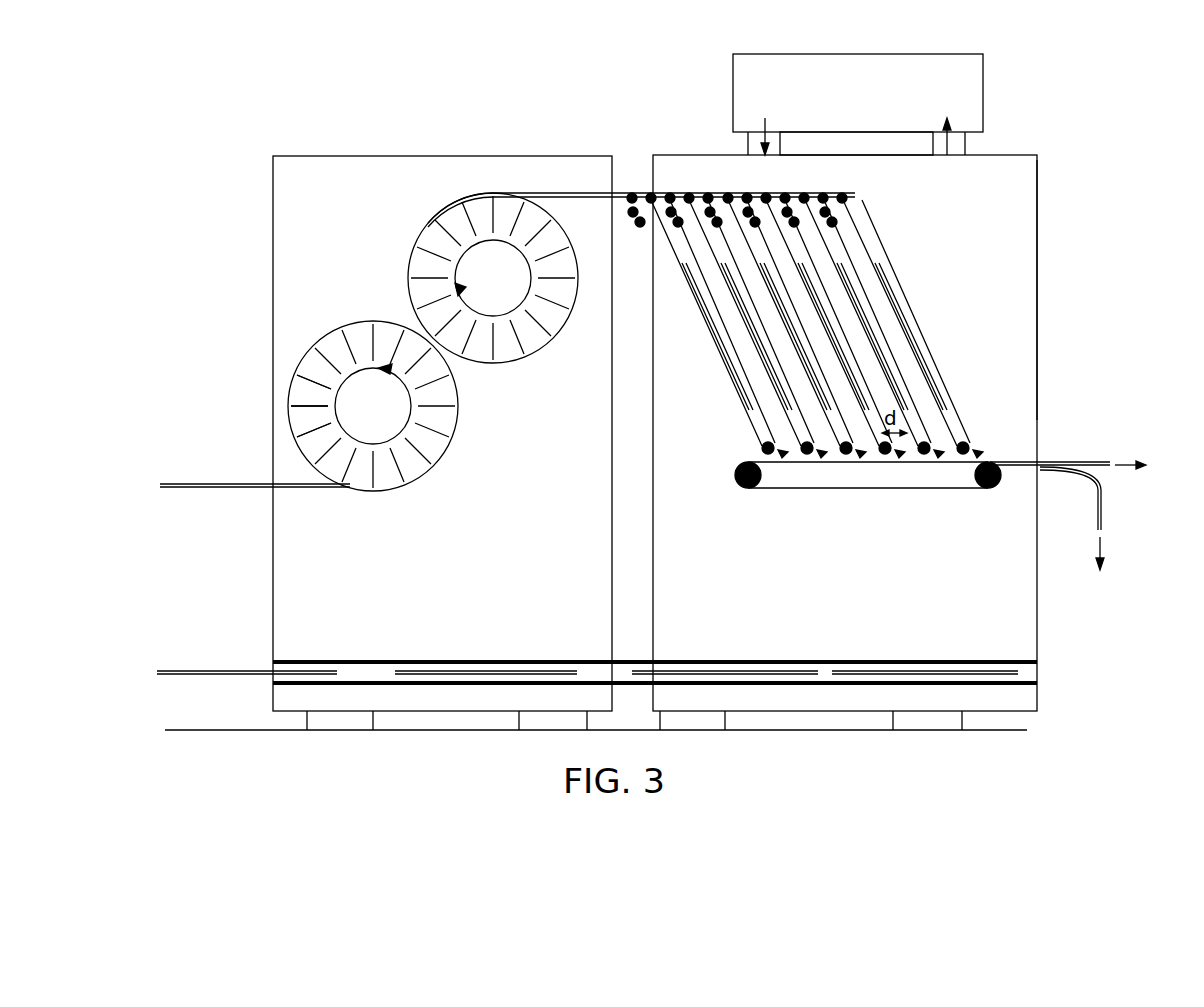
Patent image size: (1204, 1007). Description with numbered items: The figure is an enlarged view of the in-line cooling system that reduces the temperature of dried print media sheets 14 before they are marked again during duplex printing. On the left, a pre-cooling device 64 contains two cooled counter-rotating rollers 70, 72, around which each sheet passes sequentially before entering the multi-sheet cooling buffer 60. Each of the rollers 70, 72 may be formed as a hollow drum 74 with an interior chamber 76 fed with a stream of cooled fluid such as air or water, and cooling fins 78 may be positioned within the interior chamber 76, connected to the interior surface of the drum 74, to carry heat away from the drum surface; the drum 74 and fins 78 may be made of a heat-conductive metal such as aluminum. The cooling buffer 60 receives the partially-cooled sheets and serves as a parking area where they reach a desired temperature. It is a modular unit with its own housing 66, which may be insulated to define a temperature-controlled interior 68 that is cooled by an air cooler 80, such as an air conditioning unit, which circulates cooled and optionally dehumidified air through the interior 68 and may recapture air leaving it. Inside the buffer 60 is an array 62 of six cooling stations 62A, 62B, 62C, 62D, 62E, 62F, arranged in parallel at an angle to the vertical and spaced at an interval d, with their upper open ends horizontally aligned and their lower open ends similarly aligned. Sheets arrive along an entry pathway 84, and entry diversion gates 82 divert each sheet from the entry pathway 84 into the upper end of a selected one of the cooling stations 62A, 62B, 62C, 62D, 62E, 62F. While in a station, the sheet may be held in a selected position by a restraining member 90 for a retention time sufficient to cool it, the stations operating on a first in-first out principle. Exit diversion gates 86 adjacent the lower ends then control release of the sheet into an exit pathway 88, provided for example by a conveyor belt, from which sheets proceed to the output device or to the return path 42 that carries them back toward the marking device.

The print media sheets 14 is at (905, 300).
The return path 42 is at (450, 660).
The multi-sheet cooling buffer 60 is at (995, 183).
The array of cooling stations 62 is at (895, 252).
The cooling station 62A is at (657, 235).
The cooling station 62B is at (662, 215).
The cooling station 62C is at (698, 205).
The cooling station 62D is at (742, 205).
The cooling station 62E is at (862, 265).
The cooling station 62F is at (862, 215).
The pre-cooling device 64 is at (457, 154).
The housing 66 is at (1015, 236).
The temperature-controlled interior 68 is at (968, 360).
The cooled counter-rotating roller 70 is at (458, 405).
The cooled counter-rotating roller 72 is at (408, 265).
The hollow drum 74 is at (300, 360).
The interior chamber 76 is at (297, 398).
The cooling fins 78 is at (300, 432).
The air cooler 80 is at (733, 88).
The entry diversion gates 82 is at (640, 212).
The entry pathway 84 is at (627, 197).
The exit diversion gates 86 is at (942, 450).
The exit pathway 88 is at (993, 455).
The restraining member 90 is at (748, 338).